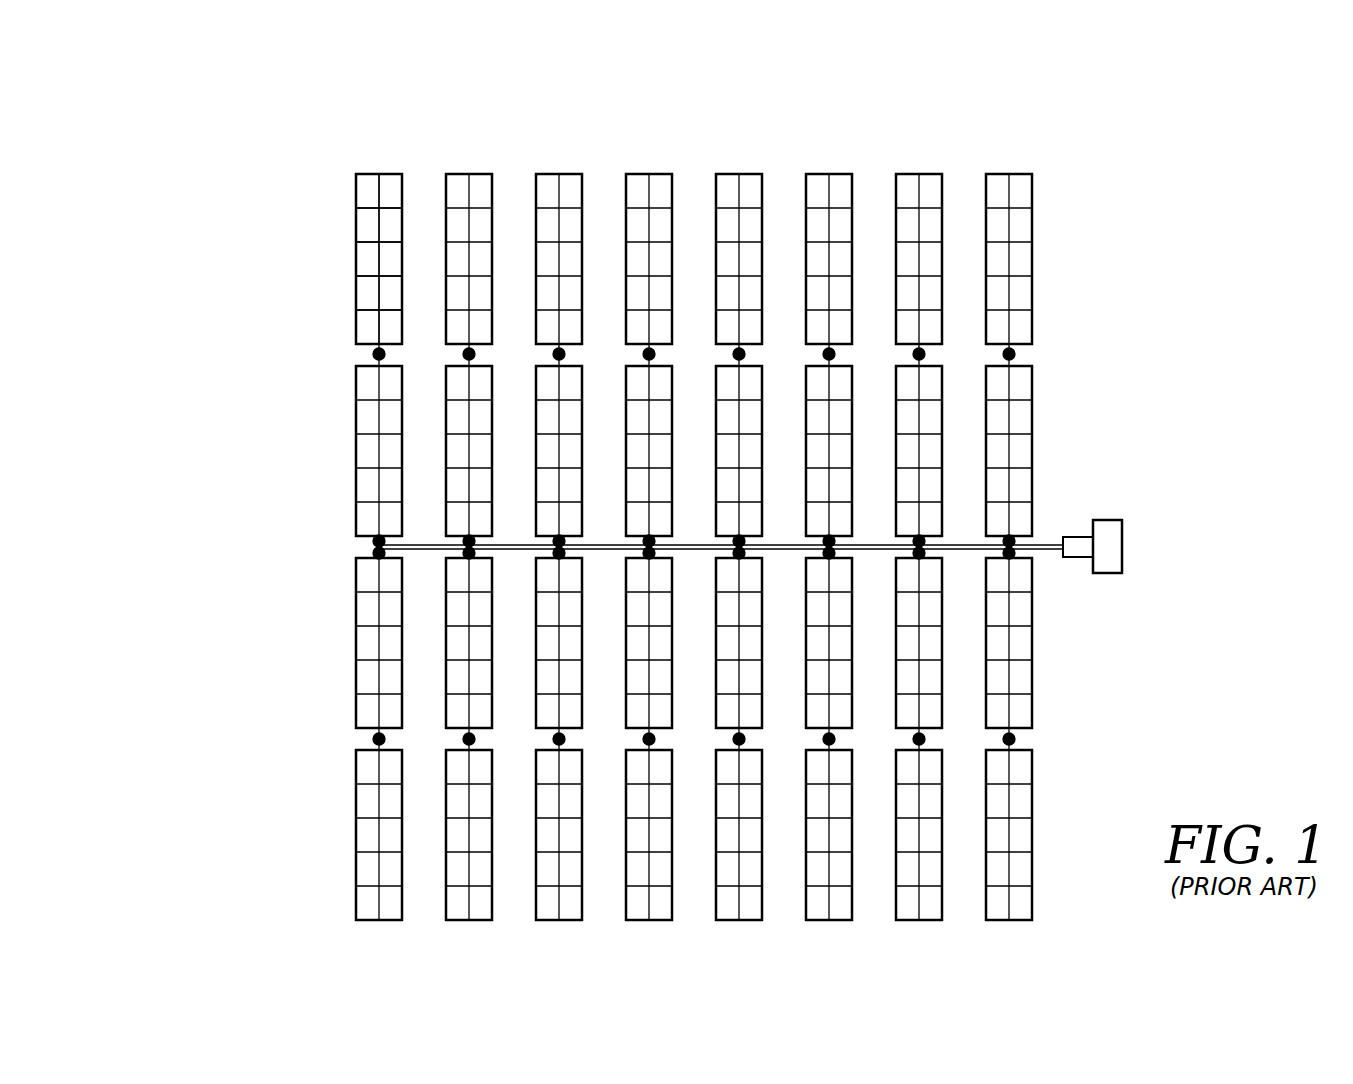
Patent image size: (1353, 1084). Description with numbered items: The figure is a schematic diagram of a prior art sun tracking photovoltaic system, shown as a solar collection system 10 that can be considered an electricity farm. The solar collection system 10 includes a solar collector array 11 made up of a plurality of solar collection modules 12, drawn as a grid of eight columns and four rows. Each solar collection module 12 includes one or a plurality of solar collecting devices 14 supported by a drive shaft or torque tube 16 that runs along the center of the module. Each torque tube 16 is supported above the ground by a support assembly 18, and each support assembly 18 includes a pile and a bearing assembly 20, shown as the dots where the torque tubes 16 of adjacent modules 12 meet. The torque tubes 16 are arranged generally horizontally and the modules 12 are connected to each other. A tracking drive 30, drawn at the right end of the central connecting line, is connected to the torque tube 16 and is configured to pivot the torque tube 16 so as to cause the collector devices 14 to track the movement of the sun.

The solar collection system 10 is at (170, 104).
The solar collector array 11 is at (260, 192).
The solar collection module 12 is at (345, 262).
The solar collecting device 14 is at (368, 178).
The torque tube 16 is at (379, 174).
The support assembly 18 is at (340, 350).
The bearing assembly 20 is at (370, 353).
The tracking drive 30 is at (1150, 548).